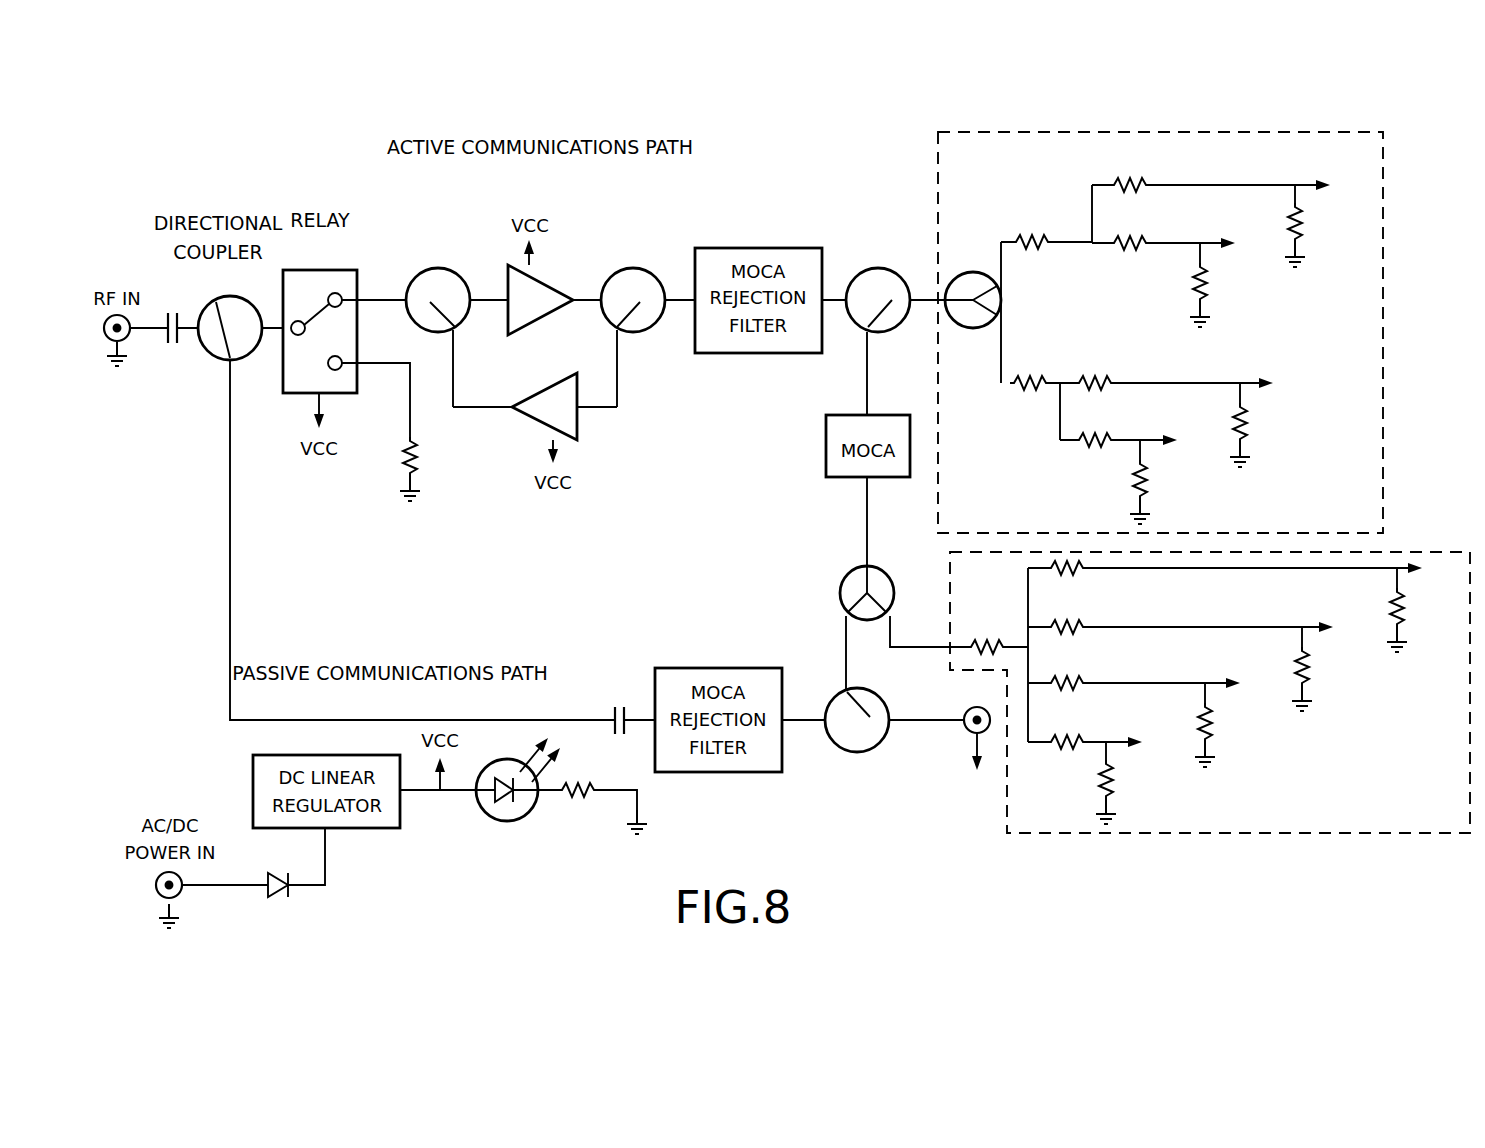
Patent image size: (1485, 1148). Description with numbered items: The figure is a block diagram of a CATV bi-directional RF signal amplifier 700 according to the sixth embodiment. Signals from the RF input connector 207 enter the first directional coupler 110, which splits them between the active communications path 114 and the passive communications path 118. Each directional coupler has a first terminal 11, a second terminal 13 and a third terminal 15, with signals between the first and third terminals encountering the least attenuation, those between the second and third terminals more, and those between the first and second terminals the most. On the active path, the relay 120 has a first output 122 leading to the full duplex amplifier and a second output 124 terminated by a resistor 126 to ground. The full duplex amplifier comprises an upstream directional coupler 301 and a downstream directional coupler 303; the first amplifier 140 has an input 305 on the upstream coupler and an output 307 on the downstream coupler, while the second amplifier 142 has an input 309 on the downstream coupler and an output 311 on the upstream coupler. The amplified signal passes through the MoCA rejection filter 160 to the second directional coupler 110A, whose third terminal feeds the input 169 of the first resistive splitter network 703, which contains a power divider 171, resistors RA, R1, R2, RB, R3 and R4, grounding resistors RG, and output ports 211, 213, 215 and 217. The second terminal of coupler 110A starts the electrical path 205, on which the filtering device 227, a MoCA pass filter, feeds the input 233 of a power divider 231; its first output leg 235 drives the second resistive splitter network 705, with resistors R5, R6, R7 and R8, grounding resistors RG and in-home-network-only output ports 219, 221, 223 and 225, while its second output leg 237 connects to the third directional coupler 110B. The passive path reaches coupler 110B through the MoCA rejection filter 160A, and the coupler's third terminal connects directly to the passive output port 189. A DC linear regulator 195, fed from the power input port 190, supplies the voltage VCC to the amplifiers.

The CATV bi-directional RF signal amplifier 700 is at (318, 157).
The active communications path 114 is at (499, 231).
The passive communications path 118 is at (390, 705).
The RF input connector 207 is at (128, 335).
The third terminal 15 is at (195, 328).
The first terminal 11 is at (278, 335).
The second terminal 13 is at (228, 425).
The first directional coupler 110 is at (230, 314).
The relay 120 is at (320, 333).
The first output 122 is at (375, 298).
The second output 124 is at (376, 400).
The resistor 126 is at (428, 469).
The upstream directional coupler 301 is at (420, 268).
The input 305 is at (495, 295).
The first amplifier 140 is at (540, 287).
The output 307 is at (580, 298).
The downstream directional coupler 303 is at (640, 268).
The second amplifier 142 is at (535, 418).
The output 311 is at (483, 409).
The input 309 is at (602, 409).
The MoCA rejection filter 160 is at (745, 248).
The input of the resistive splitter network 169 is at (683, 303).
The second directional coupler 110A is at (880, 268).
The power divider 171 is at (965, 328).
The first resistive splitter network 703 is at (1060, 132).
The resistor RA is at (1042, 240).
The resistor RB is at (1040, 390).
The resistor R1 is at (1135, 183).
The resistor R2 is at (1135, 241).
The resistor R3 is at (1103, 381).
The resistor R4 is at (1103, 439).
The resistor R5 is at (1075, 577).
The resistor R6 is at (1071, 624).
The resistor R7 is at (1071, 681).
The resistor R8 is at (1071, 740).
The grounding resistor RG is at (1305, 222).
The output port 211 is at (1328, 182).
The output port 213 is at (1242, 243).
The output port 215 is at (1268, 382).
The output port 217 is at (1168, 437).
The electrical path 205 is at (868, 388).
The filtering device 227 is at (825, 448).
The power divider 231 is at (845, 578).
The input 233 is at (870, 556).
The first output leg 235 is at (905, 645).
The second output leg 237 is at (845, 633).
The second resistive splitter network 705 is at (1285, 833).
The output port 219 is at (1418, 572).
The output port 221 is at (1330, 626).
The output port 223 is at (1236, 681).
The output port 225 is at (1136, 740).
The MoCA rejection filter 160A is at (700, 668).
The third directional coupler 110B is at (868, 750).
The passive output port 189 is at (977, 724).
The DC linear regulator 195 is at (252, 778).
The power input port 190 is at (178, 895).